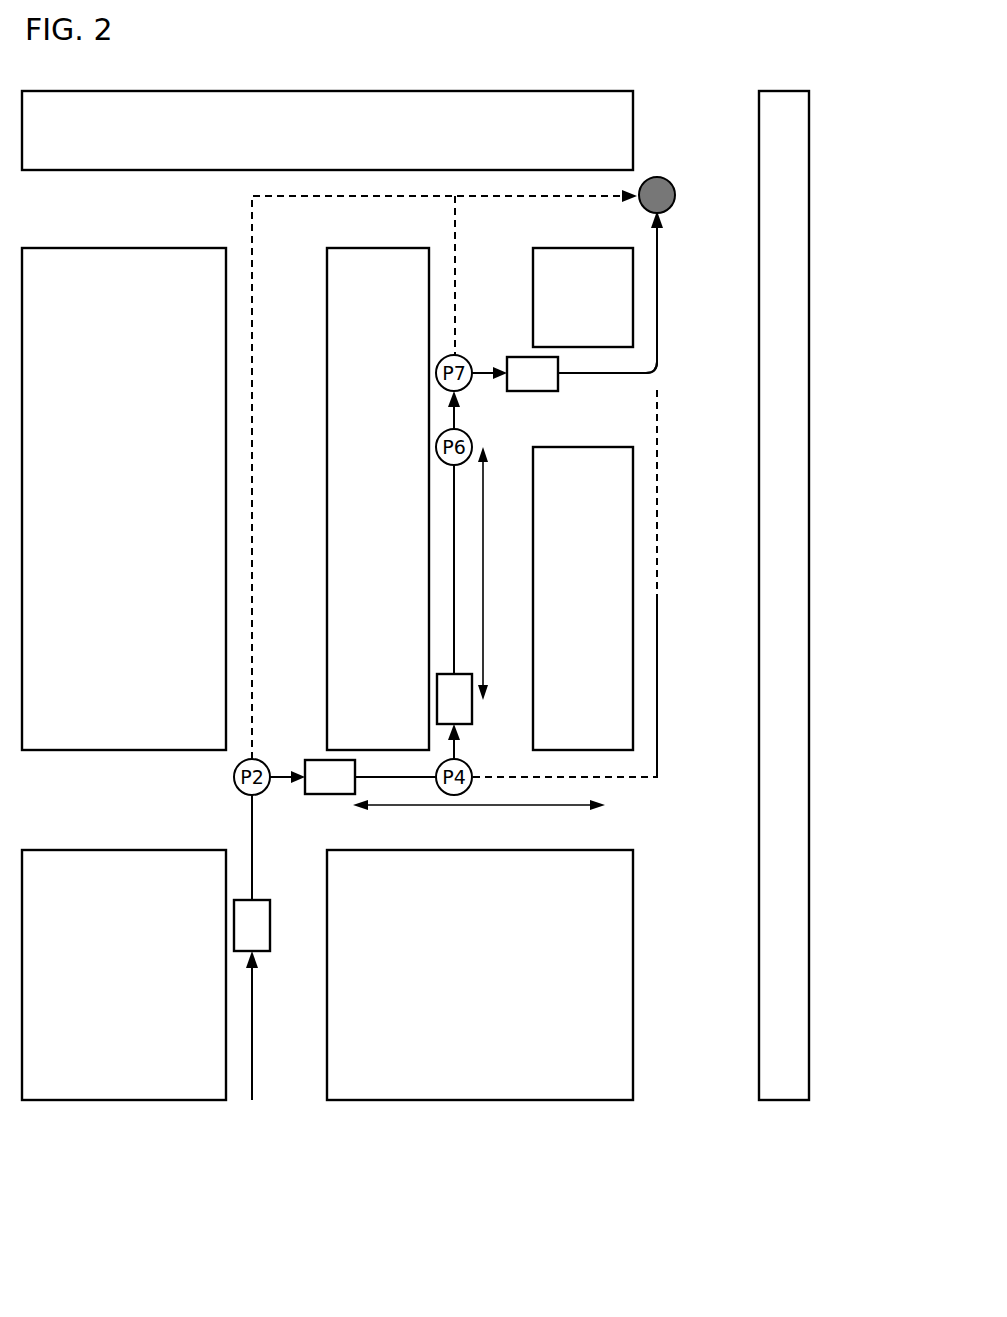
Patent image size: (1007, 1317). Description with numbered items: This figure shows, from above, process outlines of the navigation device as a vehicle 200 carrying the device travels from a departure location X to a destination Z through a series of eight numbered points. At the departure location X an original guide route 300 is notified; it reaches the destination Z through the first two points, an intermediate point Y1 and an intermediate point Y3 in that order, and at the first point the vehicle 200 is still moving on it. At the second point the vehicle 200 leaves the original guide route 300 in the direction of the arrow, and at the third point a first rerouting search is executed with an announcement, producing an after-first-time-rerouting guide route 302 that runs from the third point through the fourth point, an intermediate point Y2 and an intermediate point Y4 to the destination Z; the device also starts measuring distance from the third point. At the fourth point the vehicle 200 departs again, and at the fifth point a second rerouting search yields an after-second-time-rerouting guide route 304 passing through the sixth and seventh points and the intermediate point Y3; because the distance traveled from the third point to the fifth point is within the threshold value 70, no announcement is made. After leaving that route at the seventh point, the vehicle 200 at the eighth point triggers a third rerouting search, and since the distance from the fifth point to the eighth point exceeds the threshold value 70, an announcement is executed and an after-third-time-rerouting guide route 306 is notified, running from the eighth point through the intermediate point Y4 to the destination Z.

The original guide route 300 is at (250, 238).
The after-first-time-rerouting guide route 302 is at (618, 778).
The after-second-time-rerouting guide route 304 is at (457, 266).
The after-third-time-rerouting guide route 306 is at (605, 375).
The threshold value 70 is at (485, 572).
The vehicle 200 is at (270, 937).
The departure location X is at (253, 1100).
The destination Z is at (673, 205).
The intermediate point Y1 is at (258, 200).
The intermediate point Y2 is at (660, 767).
The intermediate point Y3 is at (458, 200).
The intermediate point Y4 is at (662, 366).